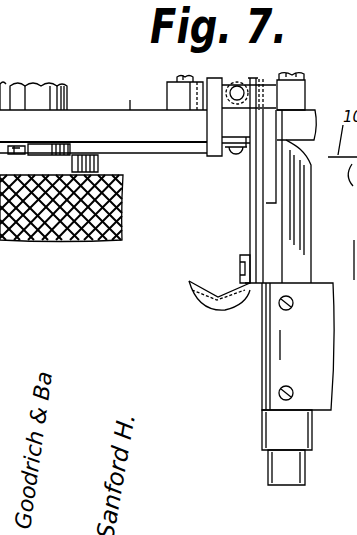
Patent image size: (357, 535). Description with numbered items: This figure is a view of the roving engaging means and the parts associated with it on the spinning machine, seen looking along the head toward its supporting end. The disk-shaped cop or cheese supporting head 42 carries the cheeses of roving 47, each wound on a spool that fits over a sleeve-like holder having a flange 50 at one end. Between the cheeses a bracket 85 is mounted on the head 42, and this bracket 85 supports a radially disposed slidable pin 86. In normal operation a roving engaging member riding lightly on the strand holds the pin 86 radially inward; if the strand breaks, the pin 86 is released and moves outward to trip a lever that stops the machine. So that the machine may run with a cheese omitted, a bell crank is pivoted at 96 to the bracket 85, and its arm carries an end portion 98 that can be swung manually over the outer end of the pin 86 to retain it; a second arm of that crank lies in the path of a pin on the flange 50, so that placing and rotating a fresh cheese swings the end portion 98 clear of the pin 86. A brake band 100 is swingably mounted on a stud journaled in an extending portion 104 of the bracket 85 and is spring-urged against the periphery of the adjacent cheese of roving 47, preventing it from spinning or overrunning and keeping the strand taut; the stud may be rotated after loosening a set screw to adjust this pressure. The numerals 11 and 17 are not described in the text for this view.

The nut 11 is at (33, 85).
The cop or cheese supporting head 42 is at (132, 113).
The roving 47 is at (123, 208).
The flange 50 is at (60, 167).
The bracket 85 is at (294, 98).
The slidable pin 86 is at (236, 100).
The pivot 96 is at (236, 158).
The end portion 98 is at (213, 123).
The brake band 100 is at (310, 348).
The extending portion 104 is at (288, 217).
The frame 17 is at (351, 260).